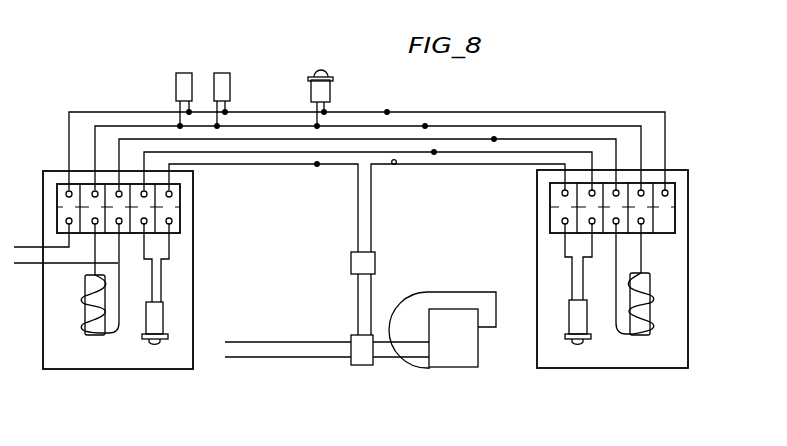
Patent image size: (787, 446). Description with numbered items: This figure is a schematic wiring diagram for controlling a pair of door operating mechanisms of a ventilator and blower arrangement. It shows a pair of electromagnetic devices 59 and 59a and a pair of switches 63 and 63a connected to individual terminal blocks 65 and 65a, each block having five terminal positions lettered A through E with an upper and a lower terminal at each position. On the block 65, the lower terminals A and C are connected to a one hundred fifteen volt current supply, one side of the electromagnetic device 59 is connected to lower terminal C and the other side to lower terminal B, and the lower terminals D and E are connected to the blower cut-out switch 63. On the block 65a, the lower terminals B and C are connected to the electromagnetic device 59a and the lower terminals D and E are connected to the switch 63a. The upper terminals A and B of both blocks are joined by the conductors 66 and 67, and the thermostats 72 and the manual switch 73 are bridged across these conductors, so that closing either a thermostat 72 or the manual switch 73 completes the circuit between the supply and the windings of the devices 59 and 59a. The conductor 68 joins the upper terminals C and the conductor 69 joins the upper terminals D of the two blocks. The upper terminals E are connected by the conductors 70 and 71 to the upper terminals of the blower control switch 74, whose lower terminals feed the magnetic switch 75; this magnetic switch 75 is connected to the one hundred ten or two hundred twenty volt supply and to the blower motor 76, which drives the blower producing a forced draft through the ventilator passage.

The electromagnetic device 59 is at (87, 310).
The electromagnetic device 59a is at (640, 310).
The blower cut-out switch 63 is at (158, 323).
The switch 63a is at (575, 320).
The terminal block 65 is at (178, 221).
The terminal block 65a is at (673, 205).
The conductor 66 is at (387, 112).
The conductor 67 is at (425, 126).
The conductor 68 is at (494, 139).
The conductor 69 is at (434, 152).
The conductor 70 is at (317, 164).
The conductor 71 is at (394, 164).
The thermostats 72 is at (185, 80).
The manual switch 73 is at (322, 75).
The blower control switch 74 is at (360, 266).
The magnetic switch 75 is at (363, 348).
The blower motor 76 is at (450, 362).